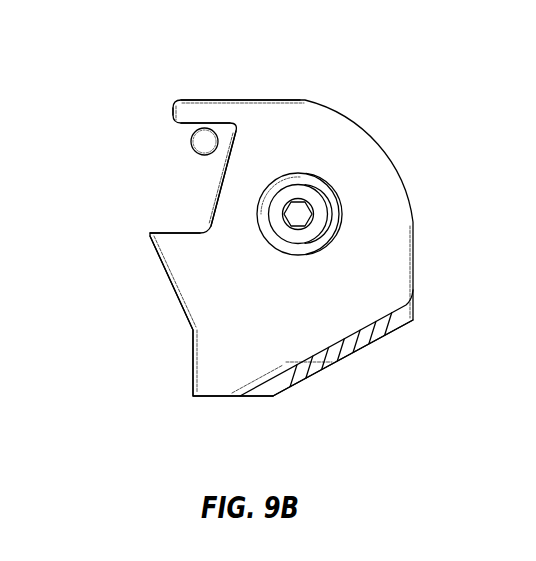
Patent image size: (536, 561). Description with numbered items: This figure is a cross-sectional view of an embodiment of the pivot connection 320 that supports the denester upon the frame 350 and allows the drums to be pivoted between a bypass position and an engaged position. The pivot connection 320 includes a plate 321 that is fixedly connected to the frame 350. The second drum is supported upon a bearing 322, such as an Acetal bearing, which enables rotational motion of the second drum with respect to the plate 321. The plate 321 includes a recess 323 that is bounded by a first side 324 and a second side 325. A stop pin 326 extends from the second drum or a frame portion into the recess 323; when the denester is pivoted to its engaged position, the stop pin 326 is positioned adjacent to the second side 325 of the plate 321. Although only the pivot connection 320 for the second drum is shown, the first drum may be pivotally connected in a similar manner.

The pivot connection 320 is at (135, 104).
The plate 321 is at (187, 302).
The bearing 322 is at (301, 192).
The recess 323 is at (206, 213).
The first side 324 is at (216, 99).
The second side 325 is at (152, 242).
The stop pin 326 is at (192, 148).
The frame 350 is at (350, 346).